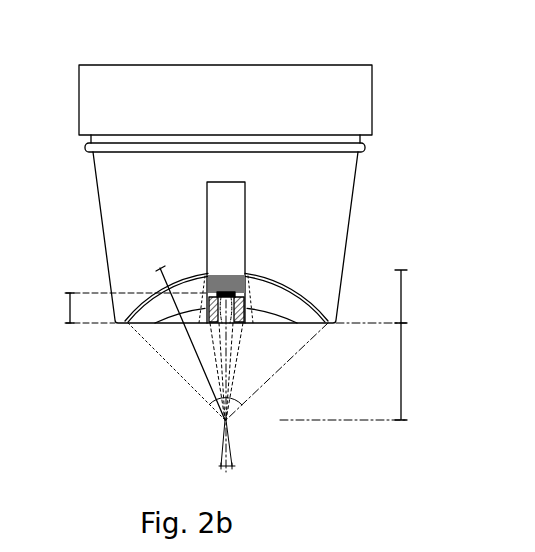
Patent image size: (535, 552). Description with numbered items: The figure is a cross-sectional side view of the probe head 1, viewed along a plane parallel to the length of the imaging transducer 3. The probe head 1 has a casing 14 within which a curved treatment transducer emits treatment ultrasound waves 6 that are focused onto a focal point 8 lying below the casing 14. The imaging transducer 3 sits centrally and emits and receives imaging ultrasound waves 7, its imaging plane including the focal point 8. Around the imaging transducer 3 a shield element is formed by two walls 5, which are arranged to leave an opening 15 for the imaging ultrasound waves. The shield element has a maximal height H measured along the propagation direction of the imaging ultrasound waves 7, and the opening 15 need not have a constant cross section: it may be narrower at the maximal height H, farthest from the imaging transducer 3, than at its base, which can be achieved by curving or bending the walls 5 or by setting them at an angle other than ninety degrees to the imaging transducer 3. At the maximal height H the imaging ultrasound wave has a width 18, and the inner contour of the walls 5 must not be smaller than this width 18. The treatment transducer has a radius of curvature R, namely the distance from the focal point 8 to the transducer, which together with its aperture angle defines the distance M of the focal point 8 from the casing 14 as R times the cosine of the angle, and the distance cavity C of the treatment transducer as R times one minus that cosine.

The probe head 1 is at (64, 45).
The casing 14 is at (95, 190).
The imaging transducer 3 is at (210, 324).
The walls 5 is at (168, 324).
The opening 15 is at (237, 330).
The radius of curvature R is at (220, 379).
The treatment ultrasound waves 6 is at (268, 378).
The imaging ultrasound waves 7 is at (222, 397).
The focal point 8 is at (222, 430).
The width 18 is at (229, 470).
The maximal height H is at (123, 308).
The distance cavity C is at (377, 296).
The distance M is at (354, 371).